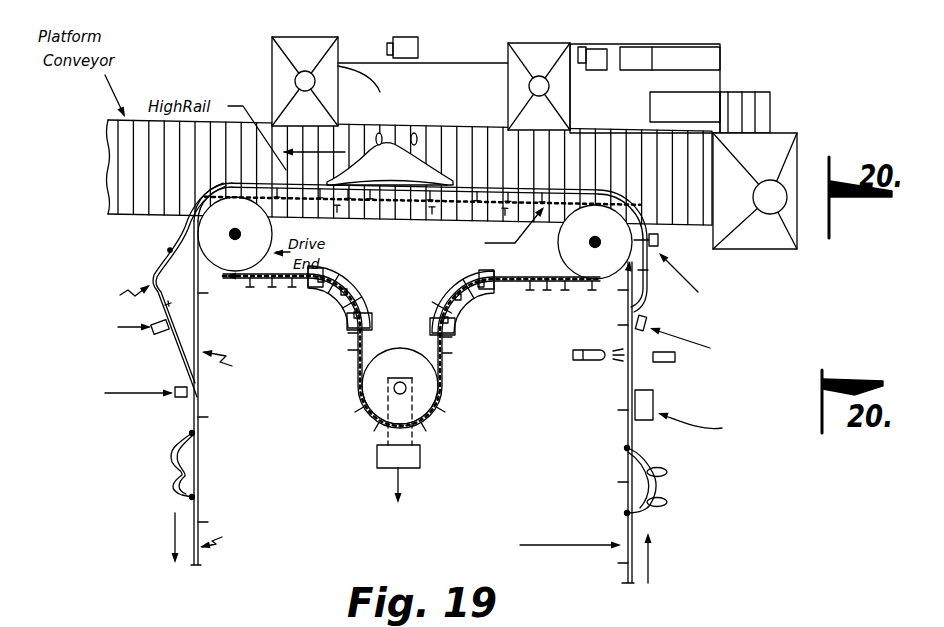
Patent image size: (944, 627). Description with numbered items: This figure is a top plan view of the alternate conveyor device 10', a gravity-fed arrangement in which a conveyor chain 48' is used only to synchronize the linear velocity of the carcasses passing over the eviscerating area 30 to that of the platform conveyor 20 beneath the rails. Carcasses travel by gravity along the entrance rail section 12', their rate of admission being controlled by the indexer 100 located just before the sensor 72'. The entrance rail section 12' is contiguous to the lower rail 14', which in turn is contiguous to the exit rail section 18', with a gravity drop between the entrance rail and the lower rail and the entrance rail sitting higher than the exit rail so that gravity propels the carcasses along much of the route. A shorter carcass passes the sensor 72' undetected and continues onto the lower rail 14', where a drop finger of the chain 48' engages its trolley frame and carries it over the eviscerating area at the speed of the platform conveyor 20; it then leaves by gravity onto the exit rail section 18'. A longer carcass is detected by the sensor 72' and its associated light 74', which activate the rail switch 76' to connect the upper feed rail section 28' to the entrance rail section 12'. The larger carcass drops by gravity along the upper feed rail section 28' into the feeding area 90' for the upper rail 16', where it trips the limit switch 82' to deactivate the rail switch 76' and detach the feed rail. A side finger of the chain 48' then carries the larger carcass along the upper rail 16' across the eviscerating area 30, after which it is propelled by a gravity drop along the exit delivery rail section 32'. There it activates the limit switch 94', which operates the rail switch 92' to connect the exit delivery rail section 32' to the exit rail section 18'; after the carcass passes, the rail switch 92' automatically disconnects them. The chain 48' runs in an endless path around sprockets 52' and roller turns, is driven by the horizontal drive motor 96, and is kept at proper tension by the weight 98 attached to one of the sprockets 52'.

The conveyor device 10' is at (564, 85).
The entrance rail section 12' is at (574, 515).
The lower rail 14' is at (419, 394).
The upper rail 16' is at (426, 167).
The exit rail section 18' is at (254, 506).
The eviscerating platform conveyor 20 is at (288, 172).
The upper feed rail section 28' is at (663, 281).
The eviscerating area 30 is at (480, 137).
The exit delivery rail section 32' is at (125, 290).
The conveyor chain 48' is at (561, 302).
The sprockets 52' is at (497, 325).
The sensor 72' is at (698, 374).
The light 74' is at (571, 367).
The rail switch 76' is at (720, 339).
The limit switch 82' is at (736, 260).
The feeding area 90' is at (742, 193).
The rail switch 92' is at (107, 413).
The limit switch 94' is at (98, 344).
The horizontal drive motor 96 is at (245, 225).
The weight 98 is at (421, 468).
The indexer 100 is at (655, 398).